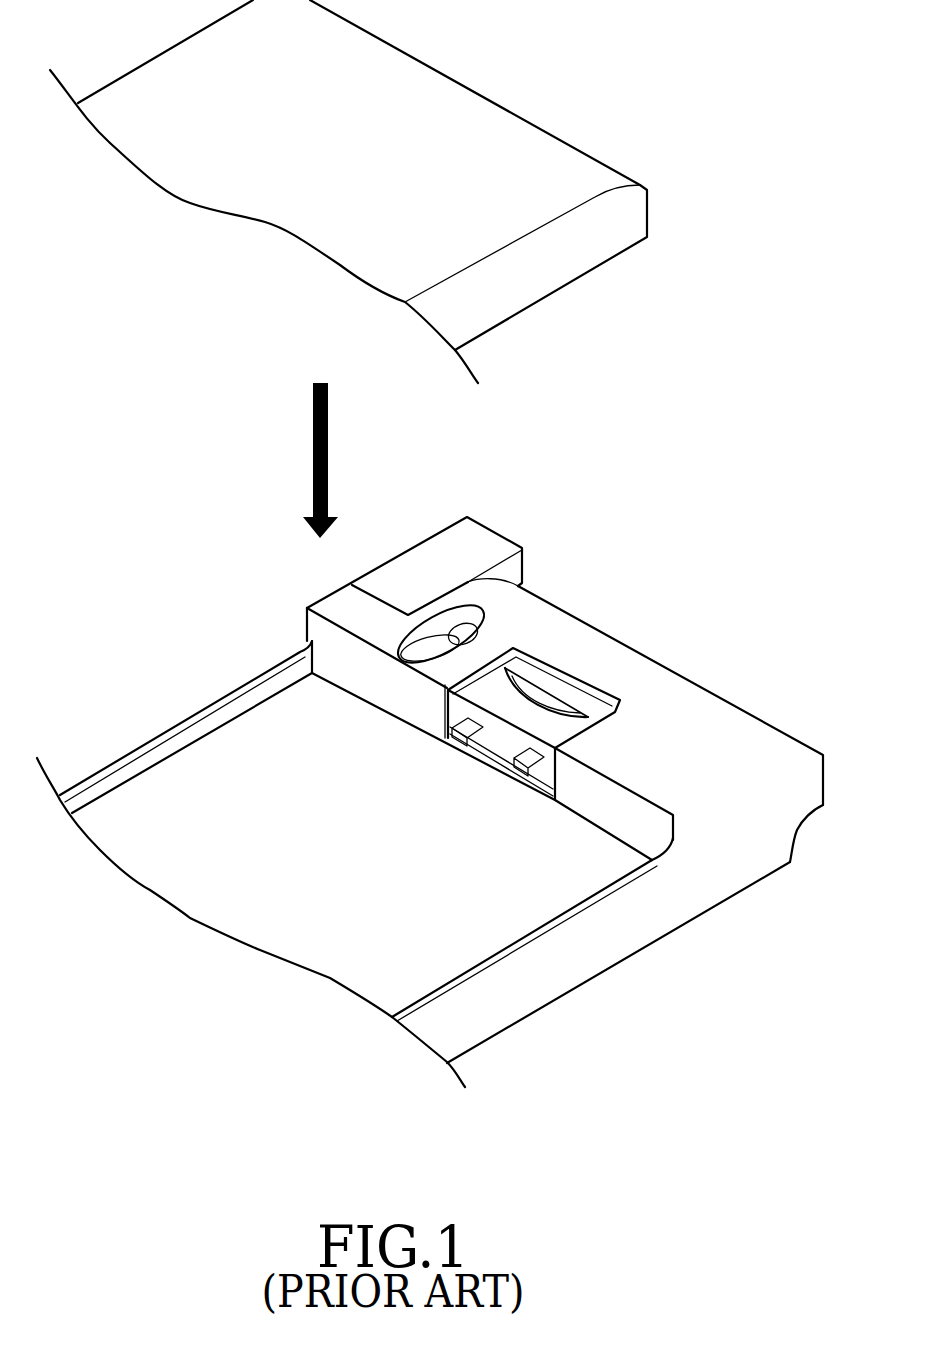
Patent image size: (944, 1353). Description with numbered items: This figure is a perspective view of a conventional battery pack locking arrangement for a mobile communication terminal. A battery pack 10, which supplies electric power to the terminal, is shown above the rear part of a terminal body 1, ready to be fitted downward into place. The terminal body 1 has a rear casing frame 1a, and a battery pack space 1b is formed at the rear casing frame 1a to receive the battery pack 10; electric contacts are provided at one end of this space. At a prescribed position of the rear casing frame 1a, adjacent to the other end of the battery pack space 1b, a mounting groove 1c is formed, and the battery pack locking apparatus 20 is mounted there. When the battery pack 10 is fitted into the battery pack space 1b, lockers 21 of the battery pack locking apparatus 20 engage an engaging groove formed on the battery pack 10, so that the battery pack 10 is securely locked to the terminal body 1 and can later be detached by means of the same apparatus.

The terminal body 1 is at (745, 912).
The rear casing frame 1a is at (673, 708).
The battery pack space 1b is at (483, 925).
The mounting groove 1c is at (540, 662).
The battery pack 10 is at (674, 183).
The battery pack locking apparatus 20 is at (590, 680).
The lockers 21 is at (525, 762).